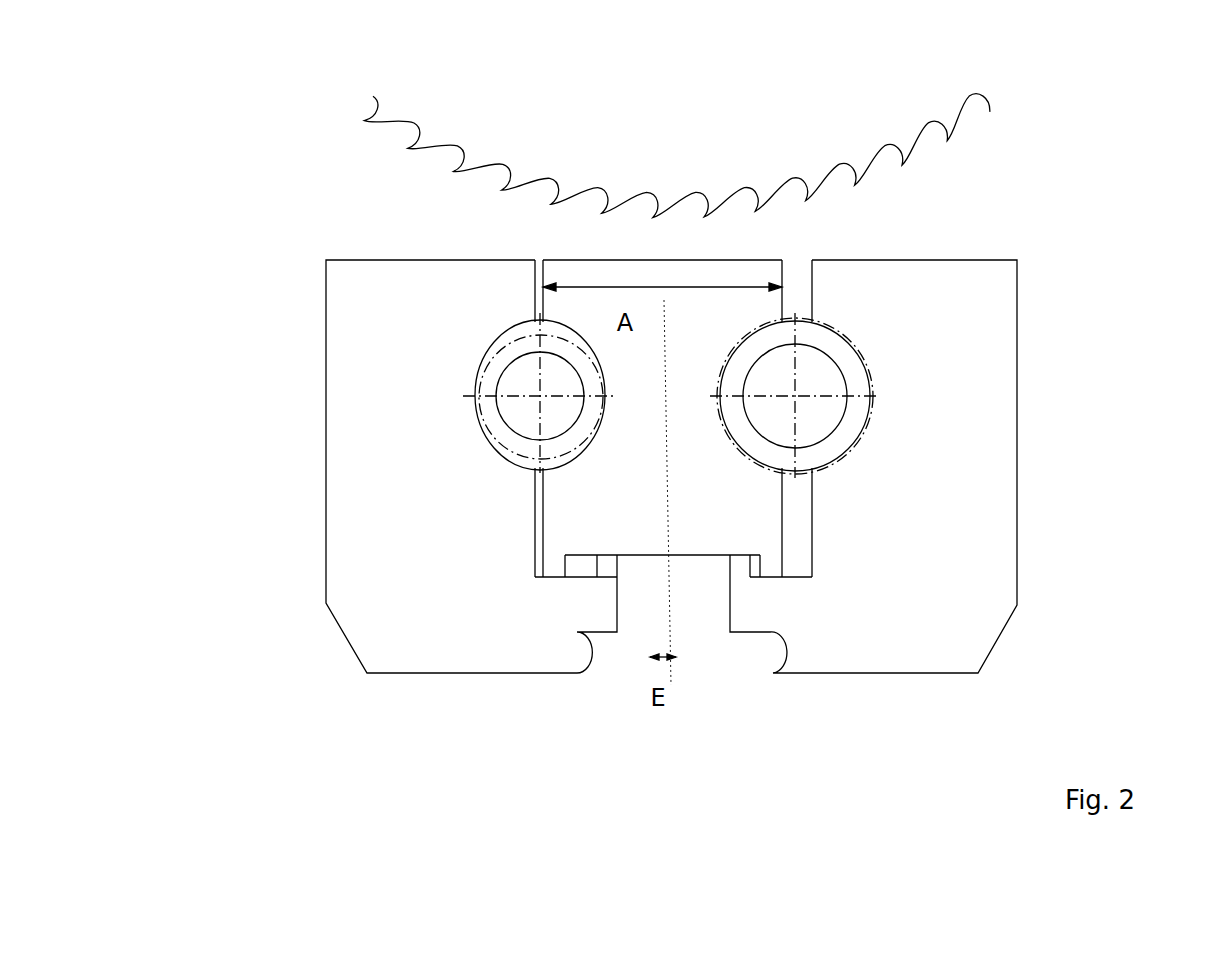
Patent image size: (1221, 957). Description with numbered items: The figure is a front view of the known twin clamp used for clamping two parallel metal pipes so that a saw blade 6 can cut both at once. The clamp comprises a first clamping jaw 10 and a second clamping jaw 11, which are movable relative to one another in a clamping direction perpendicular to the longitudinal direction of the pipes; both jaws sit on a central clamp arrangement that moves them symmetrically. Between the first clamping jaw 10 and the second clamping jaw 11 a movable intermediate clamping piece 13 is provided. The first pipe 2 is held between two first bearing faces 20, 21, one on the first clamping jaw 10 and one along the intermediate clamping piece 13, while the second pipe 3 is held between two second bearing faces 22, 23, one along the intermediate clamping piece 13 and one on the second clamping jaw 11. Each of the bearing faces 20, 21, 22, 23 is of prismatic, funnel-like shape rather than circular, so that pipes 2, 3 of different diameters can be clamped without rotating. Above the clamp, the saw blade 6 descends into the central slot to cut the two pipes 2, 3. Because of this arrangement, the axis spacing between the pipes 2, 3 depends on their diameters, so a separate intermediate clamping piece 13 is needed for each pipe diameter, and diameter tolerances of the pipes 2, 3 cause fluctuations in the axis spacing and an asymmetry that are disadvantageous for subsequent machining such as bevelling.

The saw blade 6 is at (838, 112).
The intermediate clamping piece 13 is at (713, 309).
The second pipe 3 is at (820, 378).
The second bearing face 23 is at (870, 402).
The second bearing face 22 is at (715, 400).
The first bearing face 21 is at (600, 378).
The first bearing face 20 is at (473, 377).
The first pipe 2 is at (517, 399).
The first clamping jaw 10 is at (357, 601).
The second clamping jaw 11 is at (930, 623).